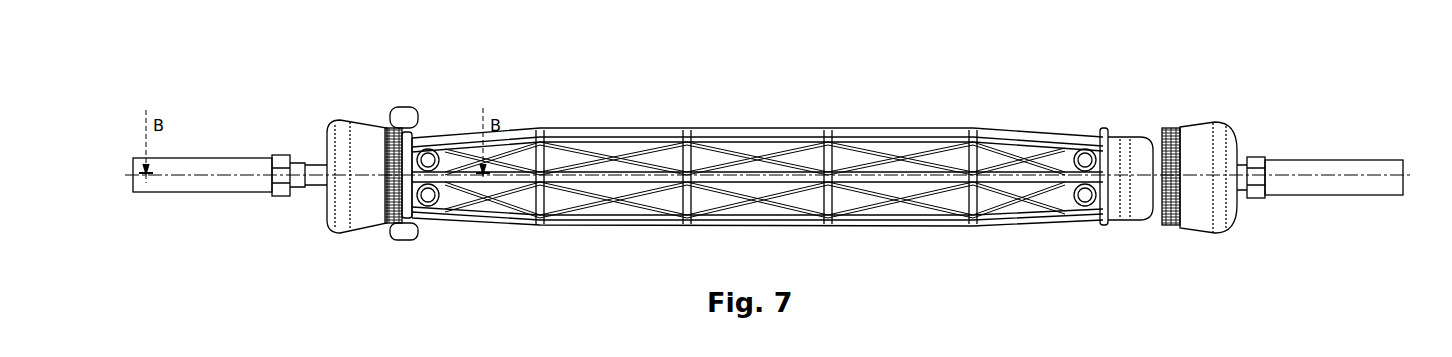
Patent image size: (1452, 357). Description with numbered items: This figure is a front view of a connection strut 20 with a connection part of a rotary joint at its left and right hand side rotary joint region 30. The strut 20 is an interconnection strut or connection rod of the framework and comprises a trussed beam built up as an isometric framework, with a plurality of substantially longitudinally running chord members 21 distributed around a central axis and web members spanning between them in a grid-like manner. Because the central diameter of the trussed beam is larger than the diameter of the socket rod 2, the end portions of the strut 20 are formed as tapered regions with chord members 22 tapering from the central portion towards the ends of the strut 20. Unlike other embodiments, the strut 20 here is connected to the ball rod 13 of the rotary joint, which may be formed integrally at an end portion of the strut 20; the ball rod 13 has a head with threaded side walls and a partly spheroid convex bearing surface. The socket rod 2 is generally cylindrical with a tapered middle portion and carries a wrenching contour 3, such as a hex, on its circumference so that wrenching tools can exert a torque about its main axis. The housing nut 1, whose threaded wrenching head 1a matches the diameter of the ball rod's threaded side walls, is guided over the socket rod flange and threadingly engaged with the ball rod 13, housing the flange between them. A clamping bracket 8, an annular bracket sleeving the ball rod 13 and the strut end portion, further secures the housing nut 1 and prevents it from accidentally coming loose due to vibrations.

The housing nut 1 is at (331, 235).
The threaded wrenching head 1a is at (382, 226).
The socket rod 2 is at (208, 193).
The wrenching contour 3 is at (268, 197).
The clamping bracket 8 is at (412, 107).
The ball rod 13 is at (1122, 135).
The strut 20 is at (740, 120).
The chord members 21 is at (545, 130).
The tapering chord members 22 is at (1018, 220).
The rotary joint region 30 is at (1176, 110).